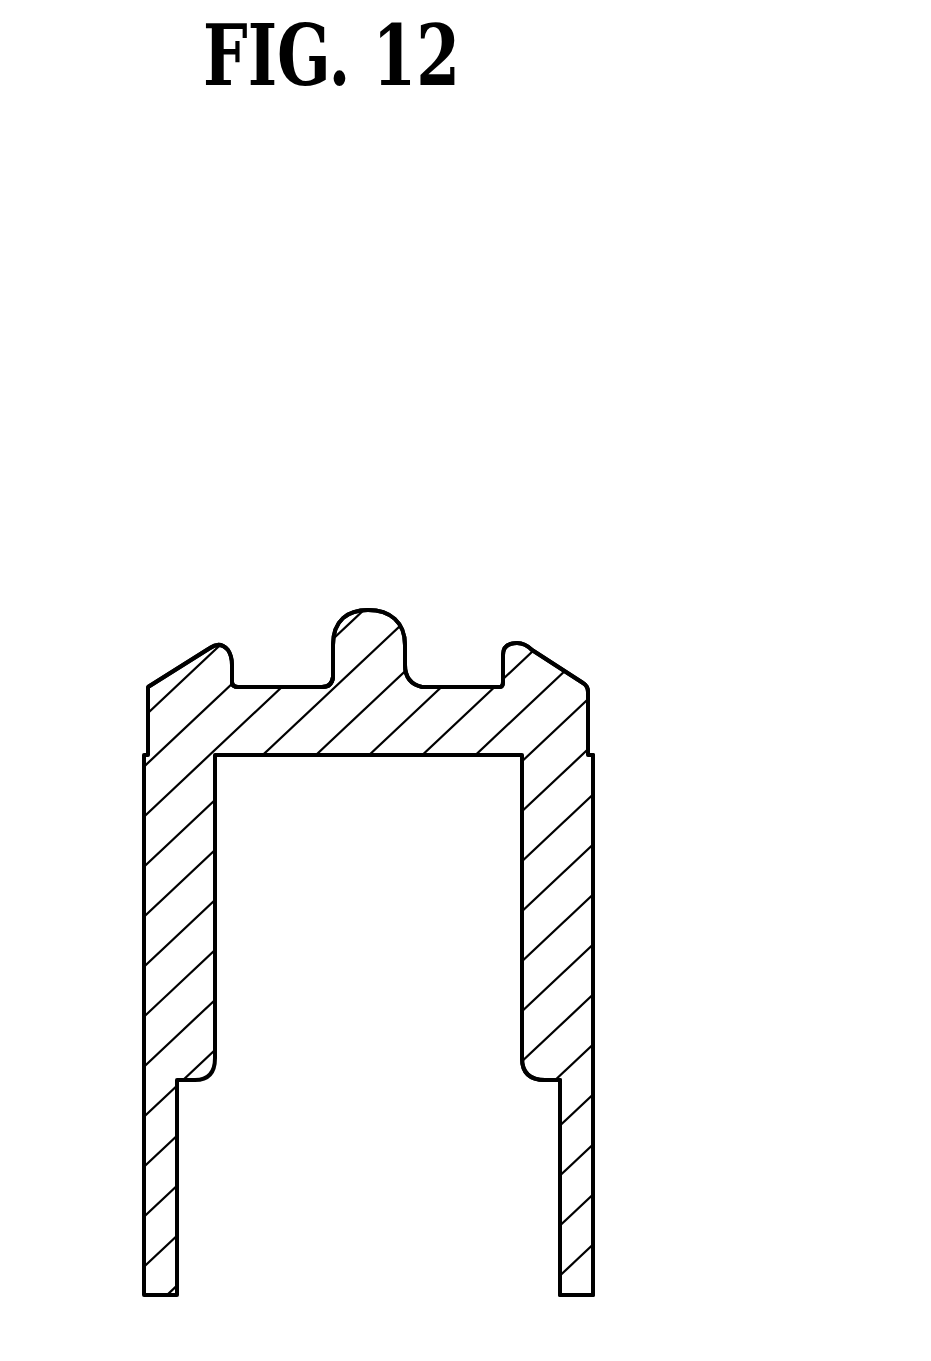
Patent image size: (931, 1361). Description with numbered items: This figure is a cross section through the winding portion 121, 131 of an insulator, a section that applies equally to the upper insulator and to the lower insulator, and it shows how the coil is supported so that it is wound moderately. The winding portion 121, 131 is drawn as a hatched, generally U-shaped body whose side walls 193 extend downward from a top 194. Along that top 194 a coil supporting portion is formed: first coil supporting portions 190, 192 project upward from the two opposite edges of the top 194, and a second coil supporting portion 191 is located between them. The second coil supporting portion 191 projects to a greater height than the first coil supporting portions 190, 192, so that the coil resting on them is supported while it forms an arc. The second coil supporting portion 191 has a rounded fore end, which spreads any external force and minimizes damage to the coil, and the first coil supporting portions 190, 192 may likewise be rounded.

The first hook 121 is at (572, 437).
The second hook 131 is at (572, 437).
The first protrusion 190 is at (160, 657).
The second protrusion 191 is at (365, 622).
The third protrusion 192 is at (546, 660).
The side wall 193 is at (593, 949).
The recess 194 is at (273, 687).